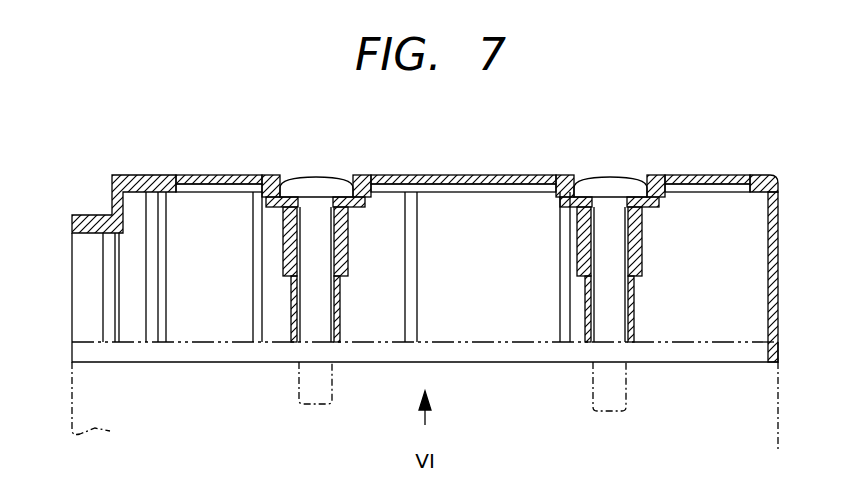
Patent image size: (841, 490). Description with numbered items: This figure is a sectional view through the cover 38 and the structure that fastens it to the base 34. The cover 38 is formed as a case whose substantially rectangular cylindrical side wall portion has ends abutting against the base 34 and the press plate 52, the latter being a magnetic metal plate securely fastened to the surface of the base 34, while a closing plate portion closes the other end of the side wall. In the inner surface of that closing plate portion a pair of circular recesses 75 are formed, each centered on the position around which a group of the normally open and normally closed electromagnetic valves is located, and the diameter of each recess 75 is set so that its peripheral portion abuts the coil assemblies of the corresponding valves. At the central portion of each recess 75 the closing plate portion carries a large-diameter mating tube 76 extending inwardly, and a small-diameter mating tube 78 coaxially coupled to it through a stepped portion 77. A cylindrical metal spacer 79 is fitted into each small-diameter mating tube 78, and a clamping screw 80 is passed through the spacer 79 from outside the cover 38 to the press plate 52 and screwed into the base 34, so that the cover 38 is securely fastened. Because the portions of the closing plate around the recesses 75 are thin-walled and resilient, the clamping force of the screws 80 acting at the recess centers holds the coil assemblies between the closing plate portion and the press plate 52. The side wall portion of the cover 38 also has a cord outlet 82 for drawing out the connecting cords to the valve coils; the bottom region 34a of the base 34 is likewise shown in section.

The base 34 is at (433, 372).
The bottom wall of lower case 34a is at (694, 362).
The cover 38 is at (497, 165).
The press plate 52 is at (456, 342).
The recess 75 is at (213, 197).
The large-diameter mating tube 76 is at (278, 203).
The stepped portion 77 is at (282, 198).
The small-diameter mating tube 78 is at (346, 250).
The spacer 79 is at (341, 312).
The clamping screw 80 is at (305, 180).
The cord outlet 82 is at (78, 291).